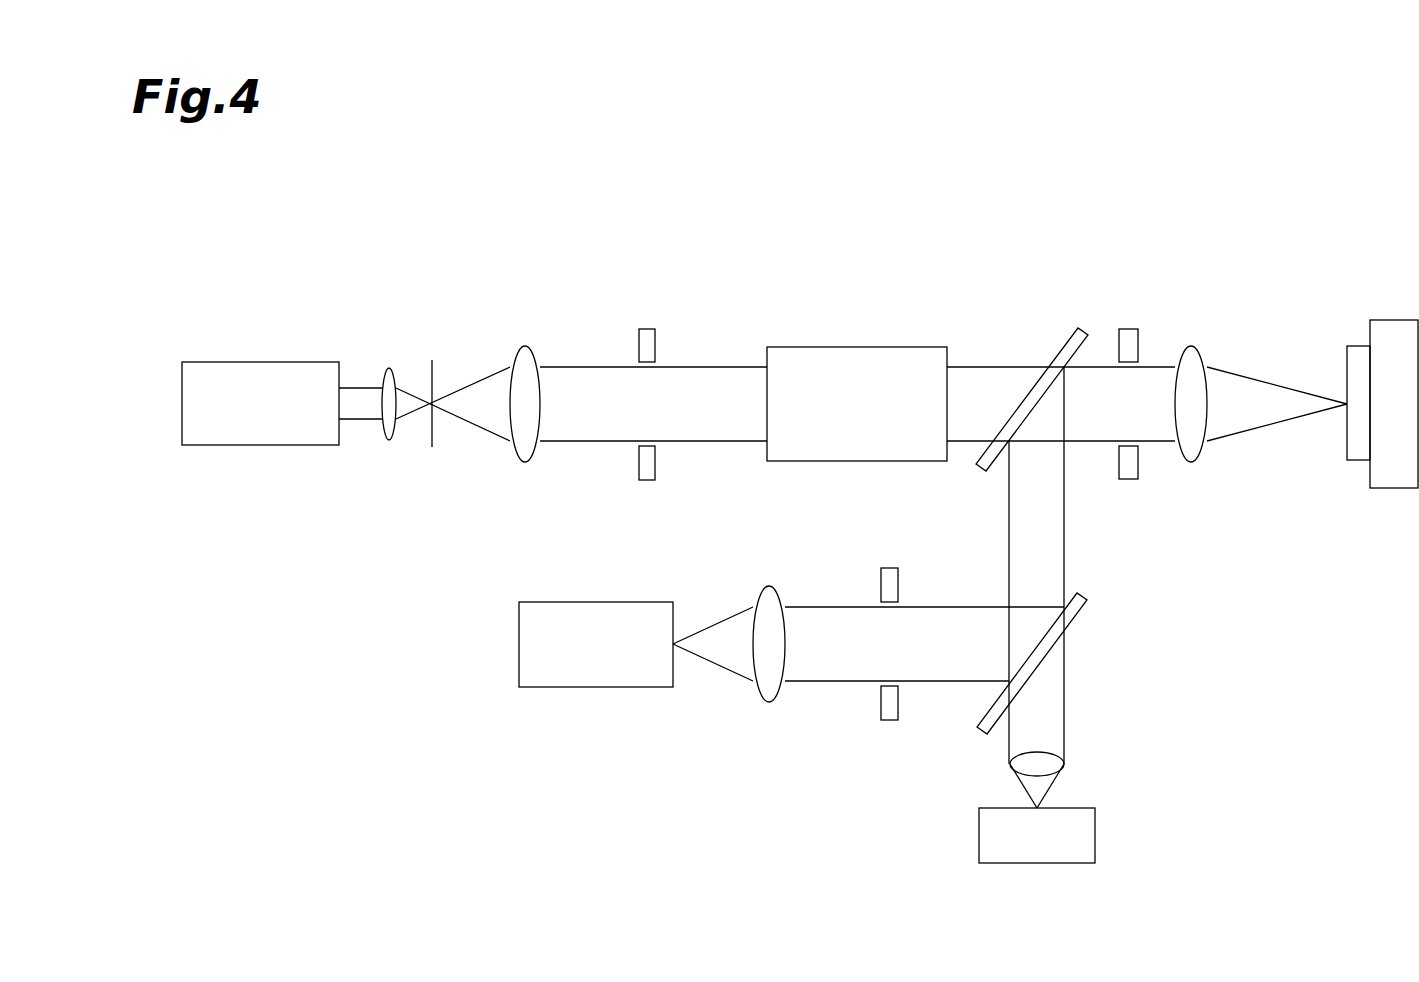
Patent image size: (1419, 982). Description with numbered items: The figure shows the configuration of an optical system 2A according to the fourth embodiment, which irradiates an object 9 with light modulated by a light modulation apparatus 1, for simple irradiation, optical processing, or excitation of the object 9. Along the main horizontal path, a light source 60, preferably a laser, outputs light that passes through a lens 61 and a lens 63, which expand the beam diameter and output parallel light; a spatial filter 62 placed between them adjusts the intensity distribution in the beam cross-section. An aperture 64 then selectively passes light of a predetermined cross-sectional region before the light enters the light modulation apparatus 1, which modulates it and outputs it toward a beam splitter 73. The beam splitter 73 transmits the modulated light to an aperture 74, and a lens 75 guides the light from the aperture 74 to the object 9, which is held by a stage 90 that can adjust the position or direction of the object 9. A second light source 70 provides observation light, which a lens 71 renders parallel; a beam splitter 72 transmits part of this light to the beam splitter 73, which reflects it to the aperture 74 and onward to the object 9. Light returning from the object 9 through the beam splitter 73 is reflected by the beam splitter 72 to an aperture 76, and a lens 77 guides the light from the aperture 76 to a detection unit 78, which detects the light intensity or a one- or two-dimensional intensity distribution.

The optical system 2A is at (966, 208).
The light modulation apparatus 1 is at (858, 347).
The object 9 is at (1357, 461).
The stage 90 is at (1398, 320).
The light source 60 is at (263, 362).
The lens 61 is at (389, 368).
The spatial filter 62 is at (434, 378).
The lens 63 is at (527, 346).
The aperture 64 is at (648, 329).
The light source 70 is at (1095, 834).
The lens 71 is at (1065, 763).
The beam splitter 72 is at (1083, 612).
The beam splitter 73 is at (1066, 339).
The aperture 74 is at (1132, 329).
The lens 75 is at (1194, 346).
The aperture 76 is at (889, 568).
The lens 77 is at (772, 586).
The detection unit 78 is at (597, 602).